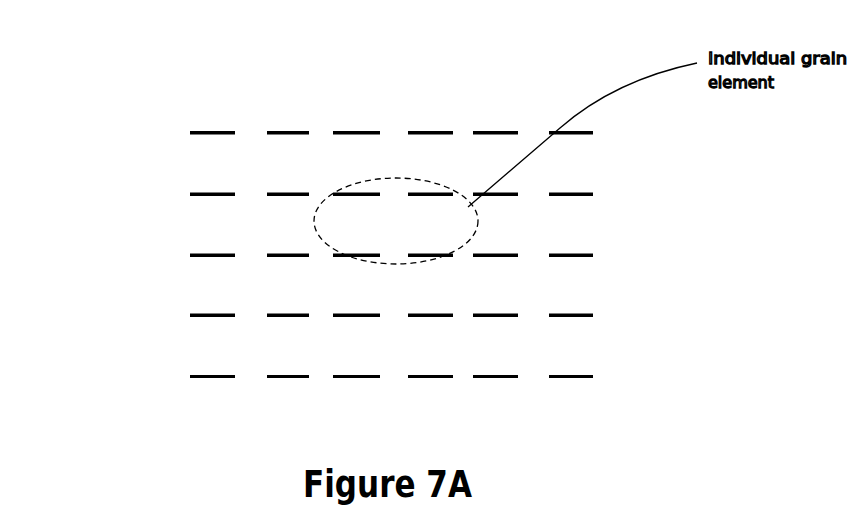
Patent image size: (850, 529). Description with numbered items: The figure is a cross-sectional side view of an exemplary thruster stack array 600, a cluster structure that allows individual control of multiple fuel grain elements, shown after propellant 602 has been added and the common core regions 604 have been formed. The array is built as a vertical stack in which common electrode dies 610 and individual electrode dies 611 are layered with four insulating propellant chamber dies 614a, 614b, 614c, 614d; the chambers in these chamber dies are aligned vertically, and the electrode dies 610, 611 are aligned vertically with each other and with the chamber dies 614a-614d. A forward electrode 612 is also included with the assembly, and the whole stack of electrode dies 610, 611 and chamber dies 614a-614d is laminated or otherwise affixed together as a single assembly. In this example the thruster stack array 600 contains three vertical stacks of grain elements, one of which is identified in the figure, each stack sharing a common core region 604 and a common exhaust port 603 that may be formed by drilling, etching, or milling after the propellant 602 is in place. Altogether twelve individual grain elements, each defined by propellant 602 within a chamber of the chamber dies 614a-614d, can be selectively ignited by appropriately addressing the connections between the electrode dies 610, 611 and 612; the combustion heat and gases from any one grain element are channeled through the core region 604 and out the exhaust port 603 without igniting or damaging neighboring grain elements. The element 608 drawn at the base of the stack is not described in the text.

The thruster stack array 600 is at (120, 73).
The propellant 602 is at (205, 163).
The exhaust port 603 is at (255, 124).
The common core region 604 is at (253, 363).
The base layer 608 is at (218, 383).
The common electrode die 610 is at (573, 252).
The individual electrode die 611 is at (580, 313).
The forward electrode 612 is at (577, 377).
The chamber die 614a is at (192, 154).
The chamber die 614b is at (192, 217).
The chamber die 614c is at (192, 280).
The chamber die 614d is at (192, 345).